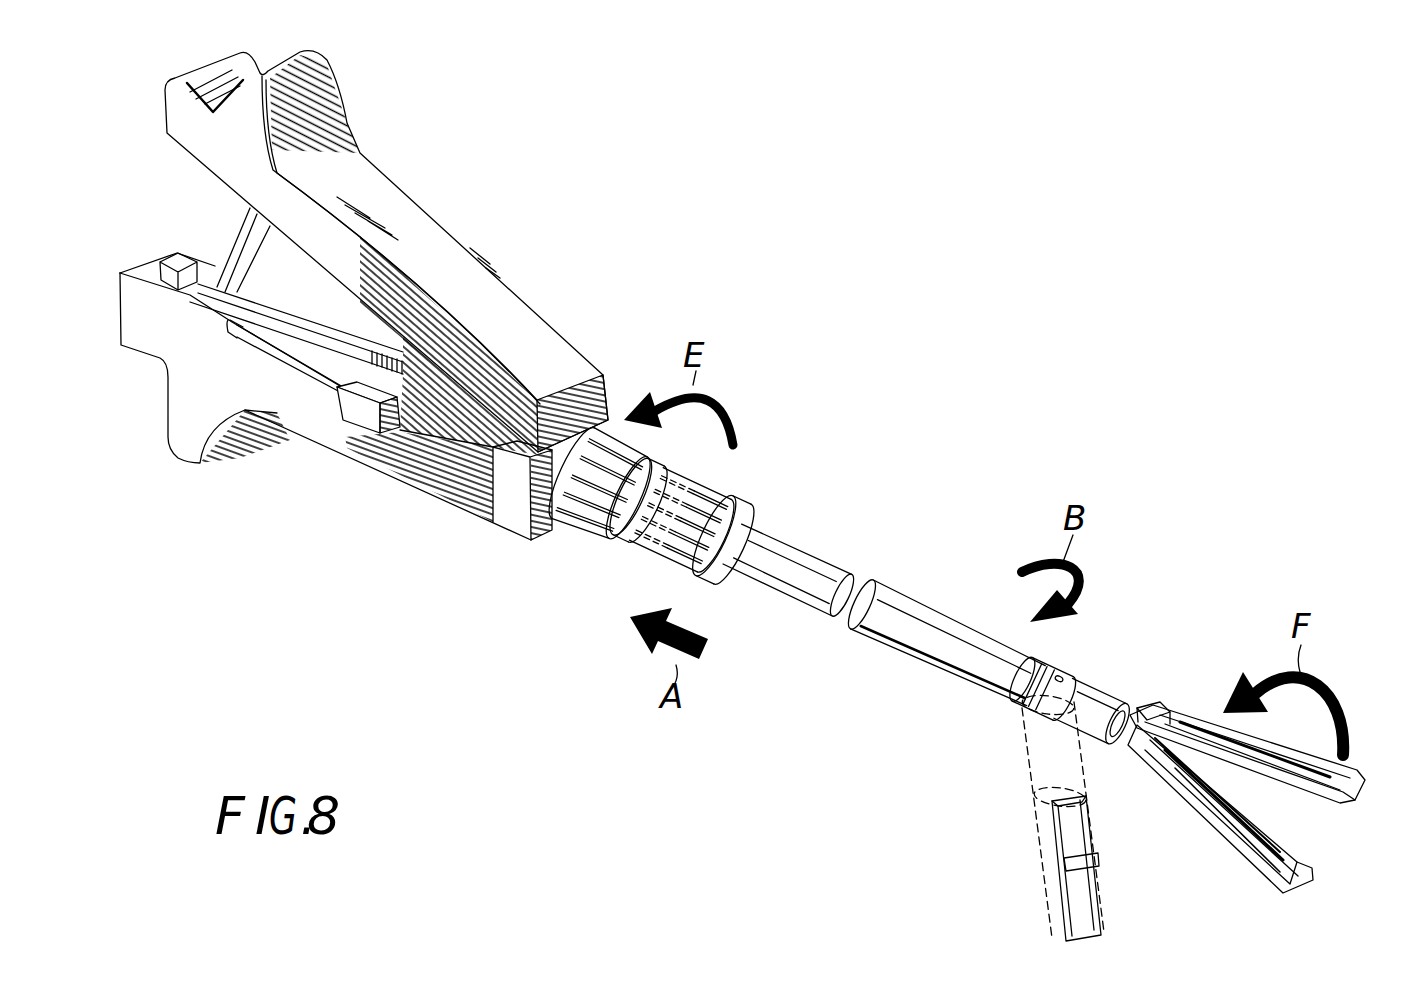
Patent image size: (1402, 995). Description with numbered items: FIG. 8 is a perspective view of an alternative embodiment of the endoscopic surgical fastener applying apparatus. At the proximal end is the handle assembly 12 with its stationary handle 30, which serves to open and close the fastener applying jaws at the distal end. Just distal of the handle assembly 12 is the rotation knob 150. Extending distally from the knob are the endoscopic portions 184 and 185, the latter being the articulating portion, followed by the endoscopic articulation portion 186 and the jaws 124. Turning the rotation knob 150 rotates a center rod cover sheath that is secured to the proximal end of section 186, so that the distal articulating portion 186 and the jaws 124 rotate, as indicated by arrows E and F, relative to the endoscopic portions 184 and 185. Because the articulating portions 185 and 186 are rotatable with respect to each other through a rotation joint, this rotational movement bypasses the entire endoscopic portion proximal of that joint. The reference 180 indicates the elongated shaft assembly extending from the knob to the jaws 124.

The handle assembly 12 is at (500, 246).
The stationary handle 30 is at (440, 486).
The rotation knob 150 is at (578, 534).
The elongated shaft assembly 180 is at (848, 389).
The endoscopic portion 184 is at (820, 531).
The articulating portion 185 is at (1073, 687).
The endoscopic articulation portion 186 is at (1113, 693).
The jaws 124 is at (1313, 795).